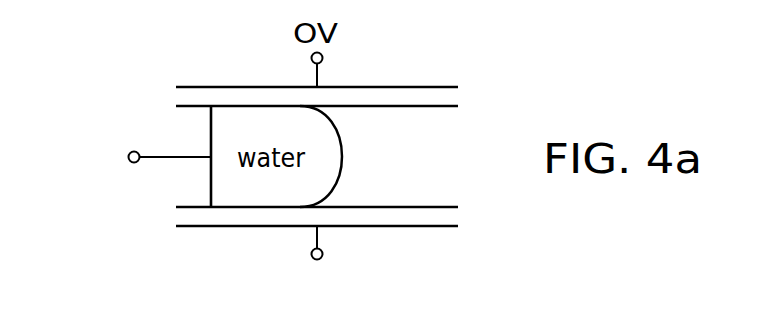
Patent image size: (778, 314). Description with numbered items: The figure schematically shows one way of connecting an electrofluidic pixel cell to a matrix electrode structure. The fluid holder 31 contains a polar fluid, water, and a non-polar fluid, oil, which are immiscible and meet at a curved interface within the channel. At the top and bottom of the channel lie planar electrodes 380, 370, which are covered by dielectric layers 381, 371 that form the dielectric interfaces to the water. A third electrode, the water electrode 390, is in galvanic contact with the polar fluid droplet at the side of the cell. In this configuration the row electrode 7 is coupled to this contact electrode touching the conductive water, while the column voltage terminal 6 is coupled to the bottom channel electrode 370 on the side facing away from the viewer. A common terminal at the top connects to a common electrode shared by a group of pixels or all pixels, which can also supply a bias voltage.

The top planar electrode 380 is at (422, 86).
The dielectric layer 381 is at (430, 96).
The dielectric layer 371 is at (430, 217).
The bottom planar electrode 370 is at (422, 227).
The water electrode 390 is at (210, 128).
The fluid holder 31 is at (448, 176).
The row electrode 7 is at (56, 213).
The column voltage terminal 6 is at (258, 273).